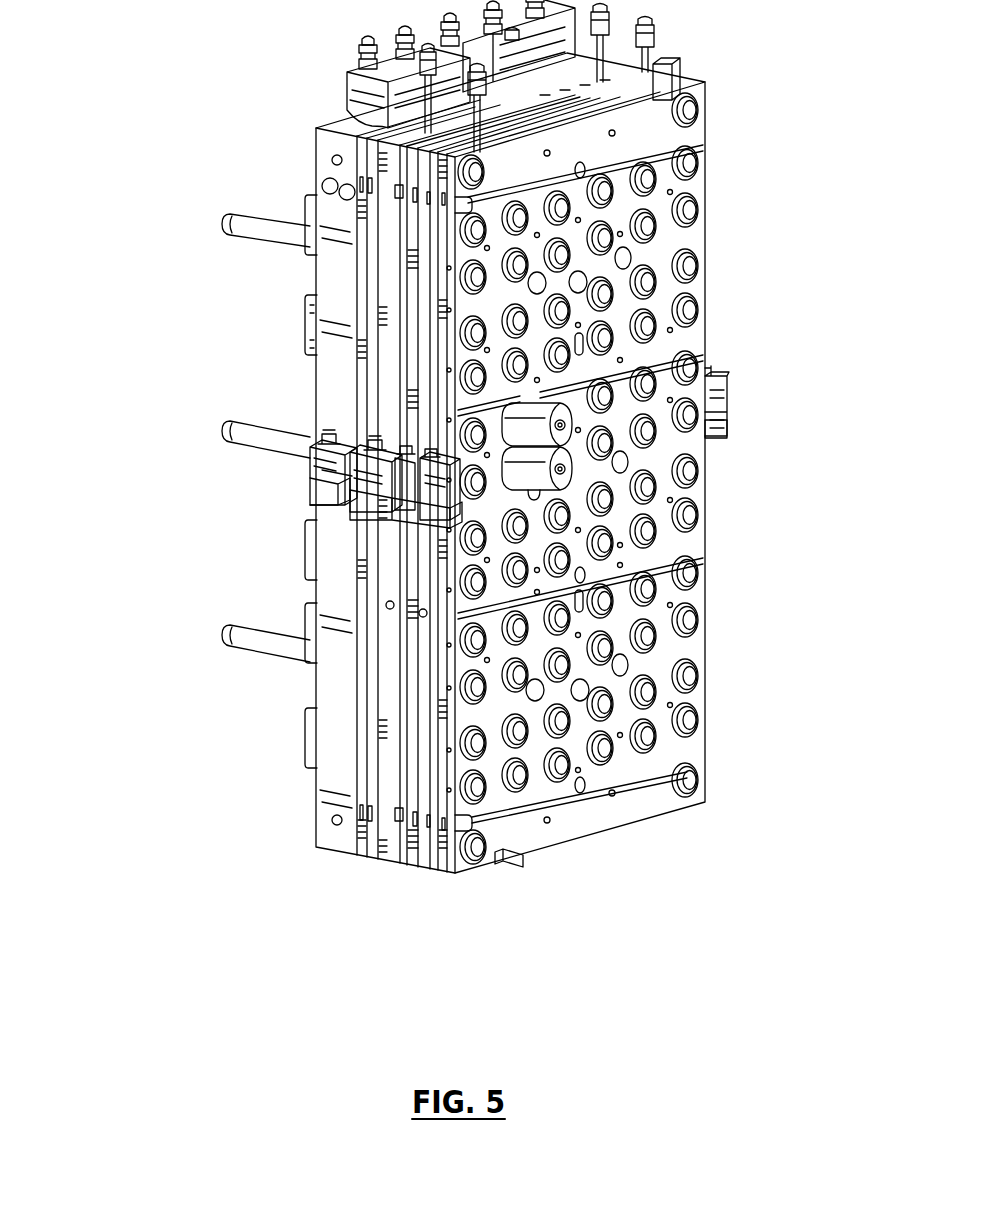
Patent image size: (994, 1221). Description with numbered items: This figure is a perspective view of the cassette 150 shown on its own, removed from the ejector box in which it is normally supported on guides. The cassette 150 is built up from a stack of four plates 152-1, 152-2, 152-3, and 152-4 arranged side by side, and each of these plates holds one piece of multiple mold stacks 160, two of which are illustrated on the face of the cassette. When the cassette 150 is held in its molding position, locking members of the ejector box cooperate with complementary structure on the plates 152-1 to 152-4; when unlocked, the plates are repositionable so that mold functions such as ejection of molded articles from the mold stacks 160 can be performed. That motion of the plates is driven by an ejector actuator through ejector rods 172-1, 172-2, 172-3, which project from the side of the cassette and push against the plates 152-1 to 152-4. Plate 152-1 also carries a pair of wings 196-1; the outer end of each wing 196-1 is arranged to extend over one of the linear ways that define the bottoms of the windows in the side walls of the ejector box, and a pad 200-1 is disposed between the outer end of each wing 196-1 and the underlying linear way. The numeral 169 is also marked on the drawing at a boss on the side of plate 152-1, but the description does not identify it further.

The cassette 150 is at (765, 122).
The plate 152-1 is at (328, 850).
The plate 152-2 is at (385, 862).
The plate 152-3 is at (422, 872).
The plate 152-4 is at (448, 877).
The mold stack 160 is at (497, 412).
The boss 169 is at (308, 322).
The ejector rod 172-1 is at (224, 642).
The ejector rod 172-2 is at (226, 432).
The ejector rod 172-3 is at (228, 222).
The wing 196-1 is at (310, 465).
The pad 200-1 is at (310, 497).